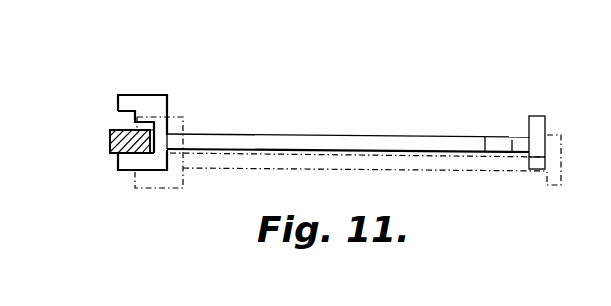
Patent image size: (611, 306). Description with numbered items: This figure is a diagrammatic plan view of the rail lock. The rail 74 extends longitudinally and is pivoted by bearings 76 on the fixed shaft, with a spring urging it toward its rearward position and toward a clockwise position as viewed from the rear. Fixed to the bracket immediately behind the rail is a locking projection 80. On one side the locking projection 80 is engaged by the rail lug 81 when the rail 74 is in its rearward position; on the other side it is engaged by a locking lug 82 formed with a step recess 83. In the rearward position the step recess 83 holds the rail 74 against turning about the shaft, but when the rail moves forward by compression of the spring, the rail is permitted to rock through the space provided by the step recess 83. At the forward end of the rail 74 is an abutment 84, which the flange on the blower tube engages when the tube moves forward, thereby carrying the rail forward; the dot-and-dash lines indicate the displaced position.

The rail 74 is at (325, 137).
The bearings 76 is at (173, 143).
The locking projection 80 is at (110, 142).
The rail lug 81 is at (127, 170).
The locking lug 82 is at (147, 105).
The step recess 83 is at (131, 121).
The abutment 84 is at (535, 170).